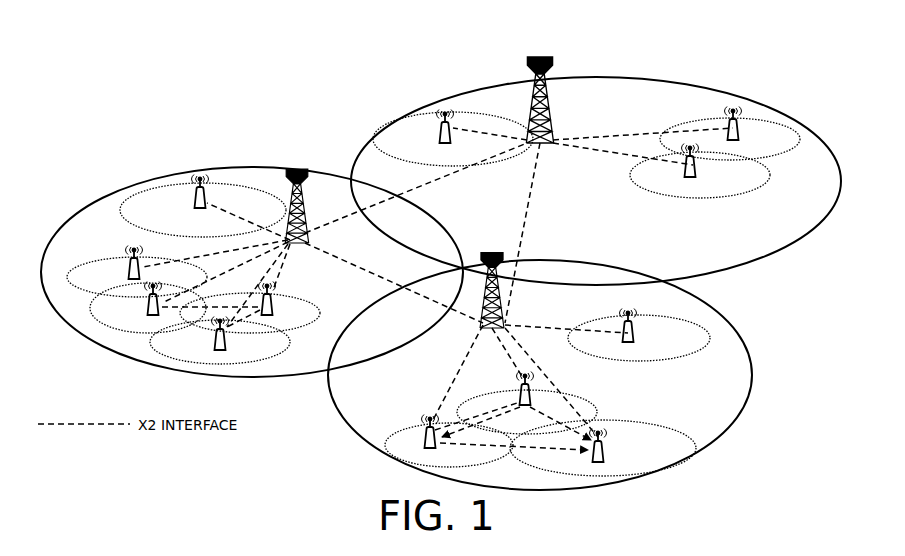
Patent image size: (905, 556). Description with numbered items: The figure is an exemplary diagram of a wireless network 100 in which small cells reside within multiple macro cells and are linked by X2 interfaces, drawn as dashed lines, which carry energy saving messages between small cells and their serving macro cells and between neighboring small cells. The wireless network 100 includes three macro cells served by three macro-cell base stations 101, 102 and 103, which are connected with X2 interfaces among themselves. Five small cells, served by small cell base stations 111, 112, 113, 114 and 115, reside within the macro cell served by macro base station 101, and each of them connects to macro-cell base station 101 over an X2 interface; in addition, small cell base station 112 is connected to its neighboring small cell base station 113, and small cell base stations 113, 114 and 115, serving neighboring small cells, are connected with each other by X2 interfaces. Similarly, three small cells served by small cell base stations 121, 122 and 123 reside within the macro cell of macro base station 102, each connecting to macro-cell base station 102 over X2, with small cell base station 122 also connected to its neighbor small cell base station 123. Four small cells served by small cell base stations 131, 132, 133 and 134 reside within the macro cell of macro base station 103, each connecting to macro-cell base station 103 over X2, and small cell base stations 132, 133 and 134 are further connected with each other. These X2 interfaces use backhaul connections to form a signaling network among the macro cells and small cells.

The wireless network 100 is at (164, 80).
The macro-cell base station 101 is at (291, 172).
The macro-cell base station 102 is at (539, 57).
The macro-cell base station 103 is at (494, 252).
The small cell base station 111 is at (200, 172).
The small cell base station 112 is at (131, 268).
The small cell base station 113 is at (146, 308).
The small cell base station 114 is at (228, 346).
The small cell base station 115 is at (274, 309).
The small cell base station 121 is at (447, 103).
The small cell base station 122 is at (739, 128).
The small cell base station 123 is at (697, 170).
The small cell base station 131 is at (636, 317).
The small cell base station 132 is at (425, 412).
The small cell base station 133 is at (530, 374).
The small cell base station 134 is at (600, 425).